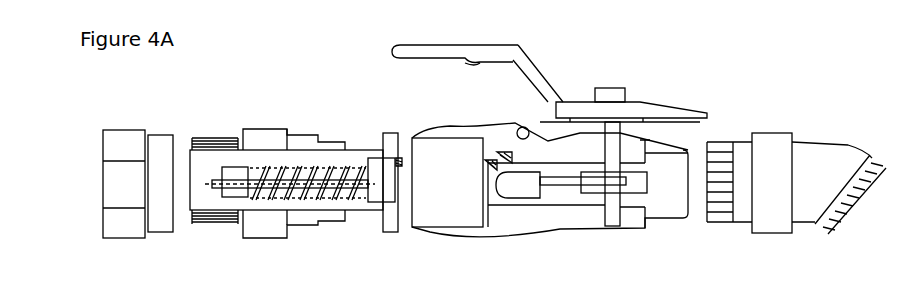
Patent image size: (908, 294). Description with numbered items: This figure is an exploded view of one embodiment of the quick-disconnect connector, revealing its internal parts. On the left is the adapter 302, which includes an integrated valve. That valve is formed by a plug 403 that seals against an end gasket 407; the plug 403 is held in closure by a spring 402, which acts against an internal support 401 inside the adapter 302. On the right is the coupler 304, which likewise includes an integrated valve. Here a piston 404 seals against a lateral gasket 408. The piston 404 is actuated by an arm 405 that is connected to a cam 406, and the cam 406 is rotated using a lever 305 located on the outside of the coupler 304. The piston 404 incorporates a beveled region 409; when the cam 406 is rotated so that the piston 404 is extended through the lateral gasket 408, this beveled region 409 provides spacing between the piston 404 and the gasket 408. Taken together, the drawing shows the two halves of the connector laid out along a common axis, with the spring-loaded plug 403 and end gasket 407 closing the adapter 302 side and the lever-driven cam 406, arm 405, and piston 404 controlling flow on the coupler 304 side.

The adapter 302 is at (326, 138).
The coupler 304 is at (505, 156).
The lever 305 is at (544, 76).
The internal support 401 is at (233, 196).
The spring 402 is at (313, 195).
The plug 403 is at (381, 197).
The piston 404 is at (492, 188).
The arm 405 is at (560, 188).
The cam 406 is at (630, 188).
The end gasket 407 is at (389, 200).
The lateral gasket 408 is at (485, 167).
The beveled region 409 is at (520, 188).